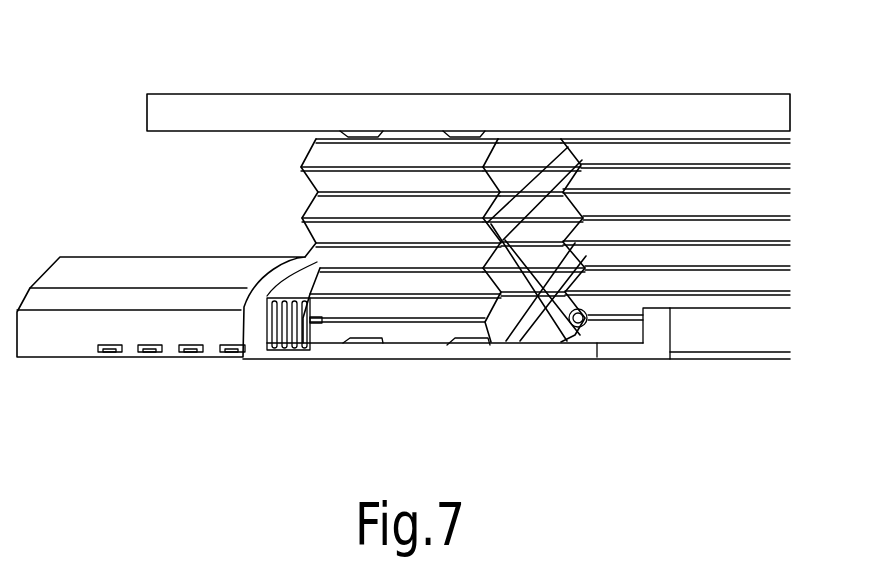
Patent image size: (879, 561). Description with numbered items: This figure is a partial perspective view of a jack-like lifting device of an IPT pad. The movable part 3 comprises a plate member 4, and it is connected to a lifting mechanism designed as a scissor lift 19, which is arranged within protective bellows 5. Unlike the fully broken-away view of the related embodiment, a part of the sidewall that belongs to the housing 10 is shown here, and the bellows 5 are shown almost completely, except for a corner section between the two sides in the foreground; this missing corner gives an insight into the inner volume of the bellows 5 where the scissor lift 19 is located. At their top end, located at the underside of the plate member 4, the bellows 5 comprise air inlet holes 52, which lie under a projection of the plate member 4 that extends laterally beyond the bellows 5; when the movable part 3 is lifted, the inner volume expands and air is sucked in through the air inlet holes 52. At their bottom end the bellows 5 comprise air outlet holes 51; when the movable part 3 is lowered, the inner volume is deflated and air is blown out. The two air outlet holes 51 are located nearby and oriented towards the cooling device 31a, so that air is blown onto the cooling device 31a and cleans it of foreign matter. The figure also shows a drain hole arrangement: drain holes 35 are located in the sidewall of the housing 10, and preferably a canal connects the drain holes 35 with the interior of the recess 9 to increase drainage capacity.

The movable part 3 is at (490, 234).
The plate member 4 is at (516, 93).
The bellows 5 is at (300, 174).
The recess 9 is at (516, 376).
The housing 10 is at (182, 320).
The scissor lift 19 is at (527, 313).
The cooling device 31a is at (292, 350).
The drain holes 35 is at (113, 352).
The air outlet holes 51 is at (462, 345).
The air inlet holes 52 is at (470, 131).